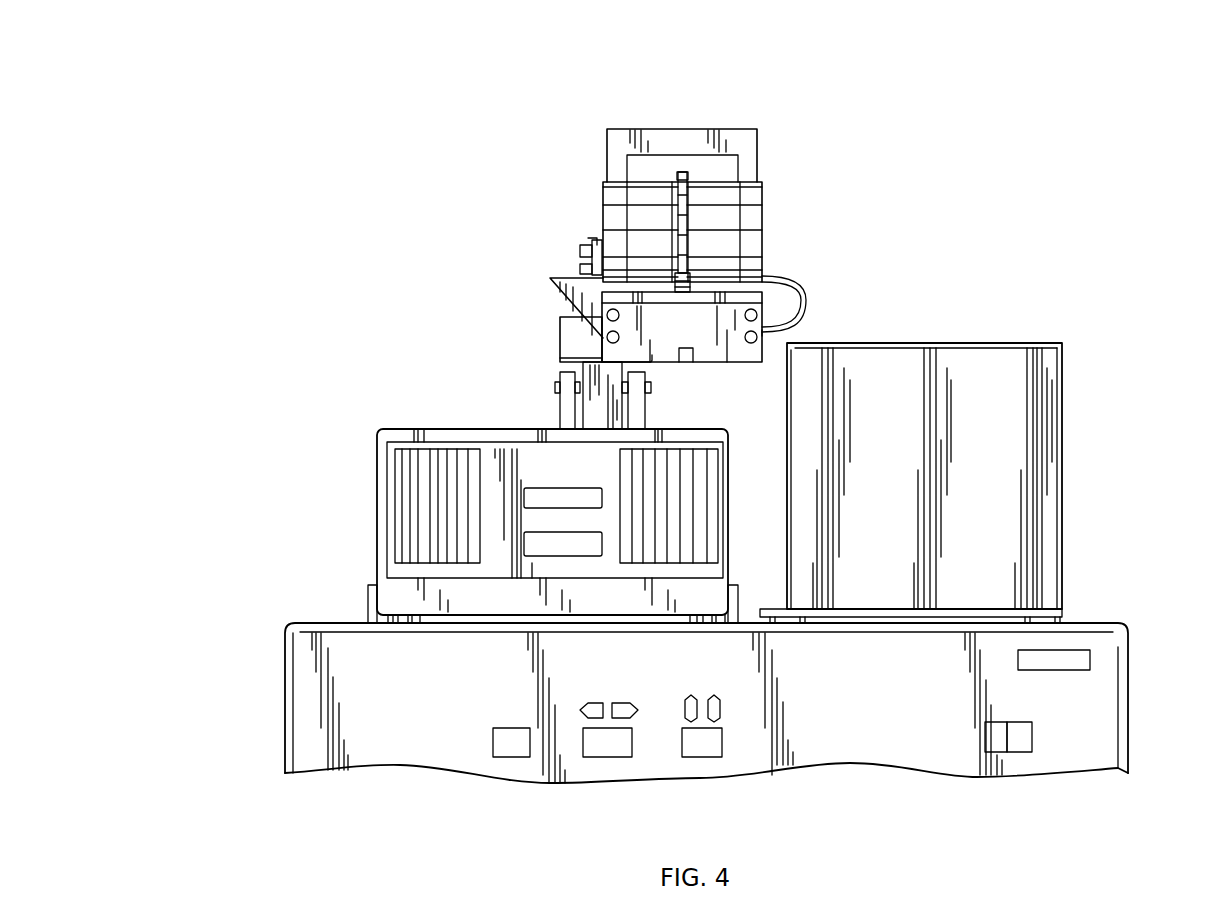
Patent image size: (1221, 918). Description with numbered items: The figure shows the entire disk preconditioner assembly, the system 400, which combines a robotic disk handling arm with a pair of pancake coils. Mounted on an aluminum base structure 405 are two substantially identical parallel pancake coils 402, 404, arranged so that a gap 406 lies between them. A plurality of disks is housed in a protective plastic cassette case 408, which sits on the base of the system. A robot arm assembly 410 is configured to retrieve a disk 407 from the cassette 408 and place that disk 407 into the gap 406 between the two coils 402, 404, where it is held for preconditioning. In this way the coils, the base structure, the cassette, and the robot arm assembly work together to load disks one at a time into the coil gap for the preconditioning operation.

The system 400 is at (1199, 73).
The pancake coil 402 is at (762, 218).
The pancake coil 404 is at (602, 199).
The aluminum base structure 405 is at (555, 248).
The gap 406 is at (688, 176).
The disk 407 is at (683, 172).
The protective plastic cassette case 408 is at (370, 507).
The robot arm assembly 410 is at (548, 335).